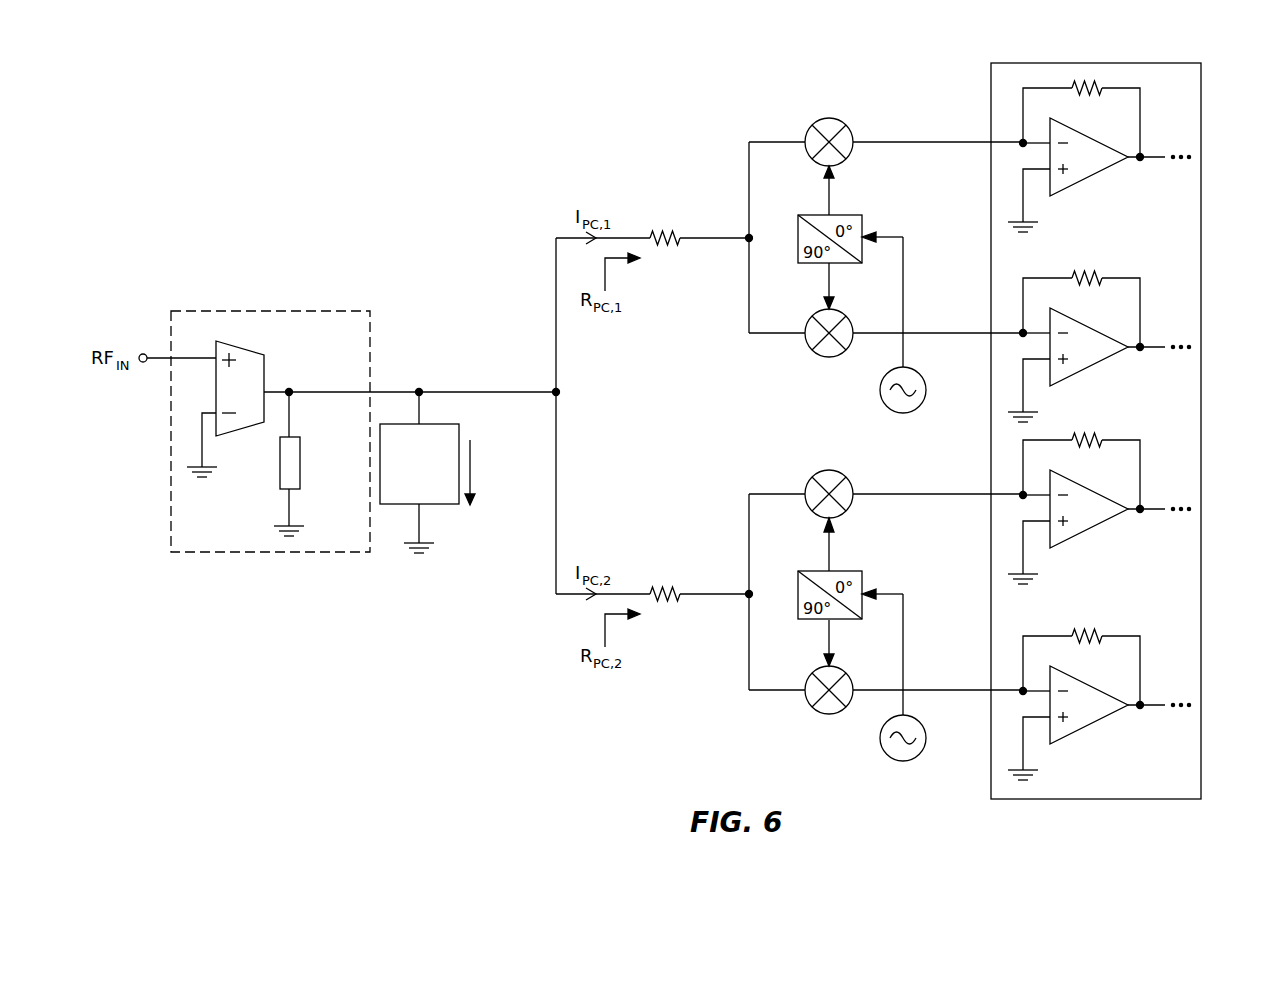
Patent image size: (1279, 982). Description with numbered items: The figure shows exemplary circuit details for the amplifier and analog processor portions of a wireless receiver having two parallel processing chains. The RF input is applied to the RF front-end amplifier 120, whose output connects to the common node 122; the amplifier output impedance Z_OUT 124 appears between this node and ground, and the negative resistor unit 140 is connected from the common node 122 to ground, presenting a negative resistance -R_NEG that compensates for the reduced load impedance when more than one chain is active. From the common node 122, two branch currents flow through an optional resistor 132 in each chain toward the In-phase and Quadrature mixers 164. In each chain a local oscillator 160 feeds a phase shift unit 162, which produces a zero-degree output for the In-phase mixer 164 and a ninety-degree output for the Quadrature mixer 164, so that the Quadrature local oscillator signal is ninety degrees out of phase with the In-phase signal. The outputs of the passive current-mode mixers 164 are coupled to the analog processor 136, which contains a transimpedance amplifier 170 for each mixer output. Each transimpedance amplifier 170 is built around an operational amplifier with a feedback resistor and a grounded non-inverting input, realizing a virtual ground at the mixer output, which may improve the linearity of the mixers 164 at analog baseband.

The RF front-end amplifier 120 is at (293, 311).
The common node 122 is at (240, 344).
The output impedance Z_OUT 124 is at (300, 478).
The negative resistor unit 140 is at (435, 489).
The resistor 132 is at (660, 246).
The mixer 164 is at (838, 122).
The phase shift unit 162 is at (845, 216).
The local oscillator 160 is at (913, 372).
The analog processor 136 is at (1202, 92).
The transimpedance amplifier 170 is at (1104, 192).